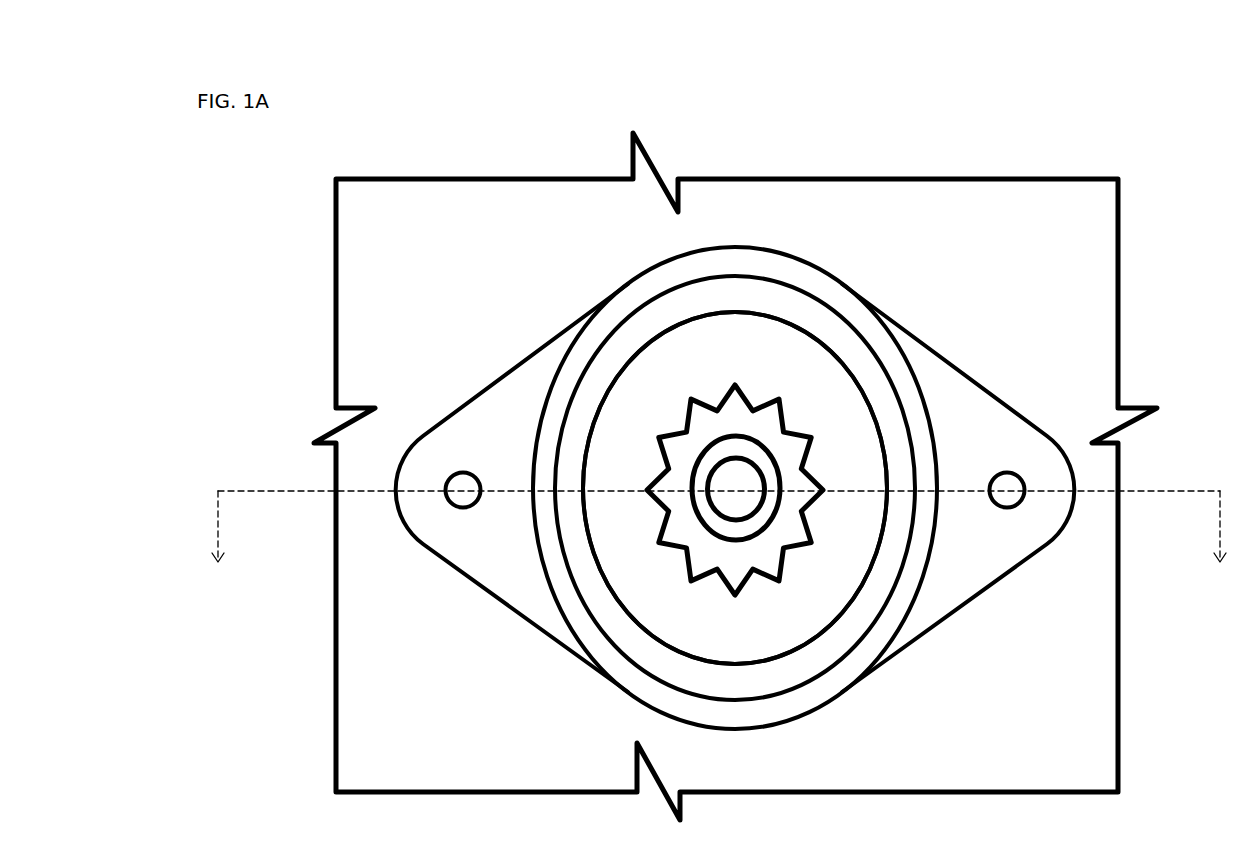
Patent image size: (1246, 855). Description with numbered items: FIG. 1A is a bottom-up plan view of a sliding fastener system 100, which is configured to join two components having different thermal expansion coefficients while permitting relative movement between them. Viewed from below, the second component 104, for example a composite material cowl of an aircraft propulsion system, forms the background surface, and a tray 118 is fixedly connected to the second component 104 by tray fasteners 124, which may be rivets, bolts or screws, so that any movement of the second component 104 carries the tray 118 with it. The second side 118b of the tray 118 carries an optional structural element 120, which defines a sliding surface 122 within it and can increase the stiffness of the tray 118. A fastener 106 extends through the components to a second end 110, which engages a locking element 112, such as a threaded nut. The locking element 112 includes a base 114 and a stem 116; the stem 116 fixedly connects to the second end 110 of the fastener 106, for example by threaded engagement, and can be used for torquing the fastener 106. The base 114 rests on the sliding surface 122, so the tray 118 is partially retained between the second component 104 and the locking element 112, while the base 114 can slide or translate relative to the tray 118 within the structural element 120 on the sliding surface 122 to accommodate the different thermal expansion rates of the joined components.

The sliding fastener system 100 is at (982, 212).
The second component 104 is at (442, 271).
The fastener 106 is at (718, 442).
The second end 110 is at (735, 490).
The locking element 112 is at (776, 315).
The base 114 is at (677, 394).
The stem 116 is at (695, 530).
The tray 118 is at (987, 405).
The second side 118b is at (528, 441).
The structural element 120 is at (833, 295).
The sliding surface 122 is at (632, 337).
The tray fasteners 124 is at (463, 498).